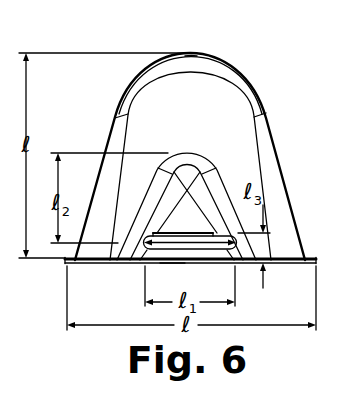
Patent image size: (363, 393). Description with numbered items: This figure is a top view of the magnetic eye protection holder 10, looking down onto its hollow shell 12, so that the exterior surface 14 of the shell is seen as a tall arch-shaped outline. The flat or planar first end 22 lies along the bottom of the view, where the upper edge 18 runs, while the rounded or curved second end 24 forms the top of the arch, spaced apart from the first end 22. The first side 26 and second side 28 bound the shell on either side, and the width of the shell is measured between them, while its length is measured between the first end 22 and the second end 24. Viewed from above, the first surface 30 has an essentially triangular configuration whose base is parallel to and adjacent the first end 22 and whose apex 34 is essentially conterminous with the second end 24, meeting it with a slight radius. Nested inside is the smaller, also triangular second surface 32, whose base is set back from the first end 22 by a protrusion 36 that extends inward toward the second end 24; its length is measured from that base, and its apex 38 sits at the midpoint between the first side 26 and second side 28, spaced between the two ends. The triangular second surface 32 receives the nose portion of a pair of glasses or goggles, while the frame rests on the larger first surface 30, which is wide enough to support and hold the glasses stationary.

The magnetic eye protection holder 10 is at (208, 131).
The hollow shell 12 is at (296, 181).
The exterior surface 14 is at (264, 114).
The upper edge 18 is at (205, 263).
The first end 22 is at (290, 264).
The second end 24 is at (192, 52).
The first side 26 is at (318, 258).
The second side 28 is at (63, 263).
The first surface 30 is at (176, 122).
The second surface 32 is at (176, 232).
The apex 34 is at (213, 57).
The protrusion 36 is at (172, 264).
The apex 38 is at (191, 153).